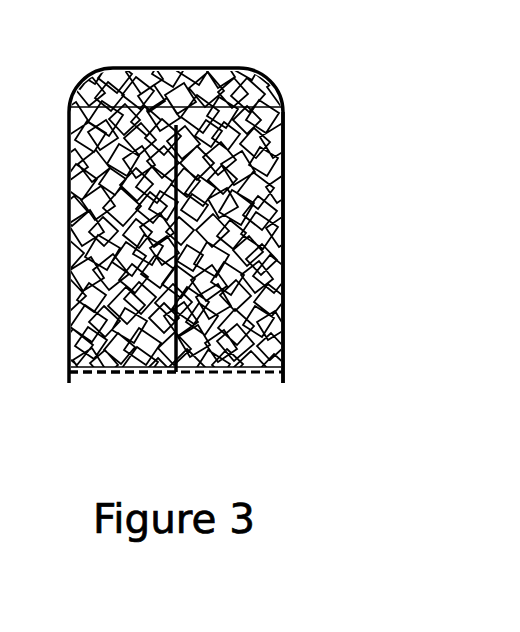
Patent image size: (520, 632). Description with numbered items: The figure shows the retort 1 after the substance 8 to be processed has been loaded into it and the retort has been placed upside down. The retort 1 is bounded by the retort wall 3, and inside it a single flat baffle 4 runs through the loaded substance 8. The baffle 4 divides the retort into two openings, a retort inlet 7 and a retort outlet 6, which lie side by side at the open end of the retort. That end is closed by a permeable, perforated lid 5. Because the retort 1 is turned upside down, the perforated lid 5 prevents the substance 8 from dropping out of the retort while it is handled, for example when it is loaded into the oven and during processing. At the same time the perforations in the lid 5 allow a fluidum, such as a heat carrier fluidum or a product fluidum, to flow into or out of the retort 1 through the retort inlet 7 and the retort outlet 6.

The retort 1 is at (309, 80).
The retort wall 3 is at (286, 191).
The baffle 4 is at (178, 139).
The perforated lid 5 is at (245, 367).
The retort outlet 6 is at (230, 378).
The retort inlet 7 is at (127, 377).
The substance 8 is at (240, 249).